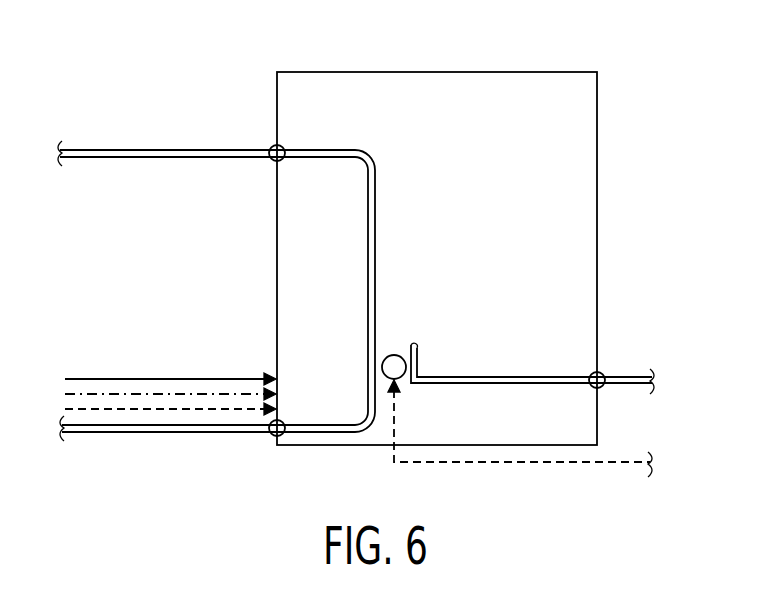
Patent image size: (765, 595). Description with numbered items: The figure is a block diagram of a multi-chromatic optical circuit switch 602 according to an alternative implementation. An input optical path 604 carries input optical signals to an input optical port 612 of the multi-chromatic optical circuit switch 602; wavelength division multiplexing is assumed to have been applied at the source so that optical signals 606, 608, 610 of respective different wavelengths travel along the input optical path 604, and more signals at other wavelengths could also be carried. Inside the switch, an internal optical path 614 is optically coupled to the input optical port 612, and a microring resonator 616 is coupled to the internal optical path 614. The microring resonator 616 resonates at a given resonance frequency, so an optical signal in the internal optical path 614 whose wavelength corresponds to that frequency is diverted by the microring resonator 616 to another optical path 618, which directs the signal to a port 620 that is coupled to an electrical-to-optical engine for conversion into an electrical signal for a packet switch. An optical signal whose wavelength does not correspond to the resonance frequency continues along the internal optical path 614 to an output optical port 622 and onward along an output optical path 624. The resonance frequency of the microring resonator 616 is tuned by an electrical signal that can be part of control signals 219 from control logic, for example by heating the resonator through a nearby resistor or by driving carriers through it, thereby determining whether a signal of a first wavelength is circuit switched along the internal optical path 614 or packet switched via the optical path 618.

The multi-chromatic optical circuit switch 602 is at (440, 72).
The input optical path 604 is at (101, 432).
The optical signal 606 is at (166, 410).
The optical signal 608 is at (166, 394).
The optical signal 610 is at (212, 378).
The input optical port 612 is at (268, 436).
The internal optical path 614 is at (331, 425).
The microring resonator 616 is at (393, 355).
The optical path 618 is at (521, 377).
The port 620 is at (605, 388).
The output optical port 622 is at (270, 160).
The output optical path 624 is at (108, 150).
The control signals 219 is at (522, 462).